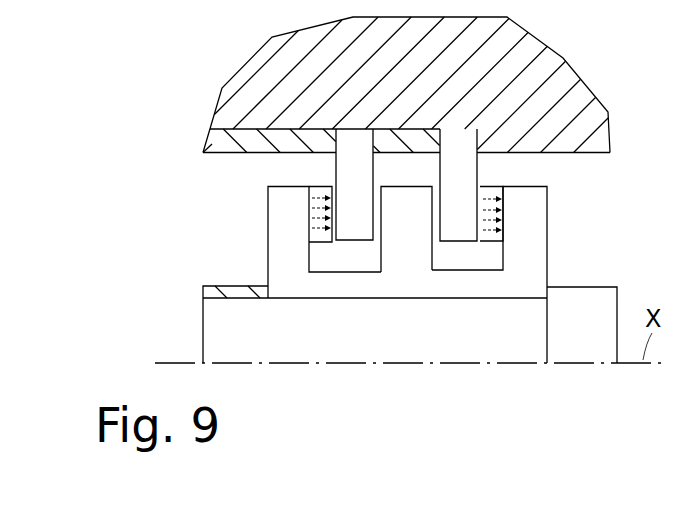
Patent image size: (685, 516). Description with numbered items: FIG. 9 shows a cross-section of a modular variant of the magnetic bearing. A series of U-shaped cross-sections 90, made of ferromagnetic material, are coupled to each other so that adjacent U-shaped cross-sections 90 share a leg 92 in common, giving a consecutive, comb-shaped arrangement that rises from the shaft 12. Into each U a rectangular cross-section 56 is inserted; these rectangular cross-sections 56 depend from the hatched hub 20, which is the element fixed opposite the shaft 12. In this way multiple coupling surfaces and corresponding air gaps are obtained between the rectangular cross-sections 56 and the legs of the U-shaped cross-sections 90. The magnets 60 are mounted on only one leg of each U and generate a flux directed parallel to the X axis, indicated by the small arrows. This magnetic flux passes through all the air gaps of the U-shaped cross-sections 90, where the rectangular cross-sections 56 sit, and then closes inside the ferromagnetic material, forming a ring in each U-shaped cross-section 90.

The hub 20 is at (212, 118).
The rectangular cross-section 56 is at (343, 225).
The U-shaped cross-section 90 is at (275, 246).
The leg 92 is at (420, 227).
The magnets 60 is at (325, 216).
The shaft 12 is at (222, 322).